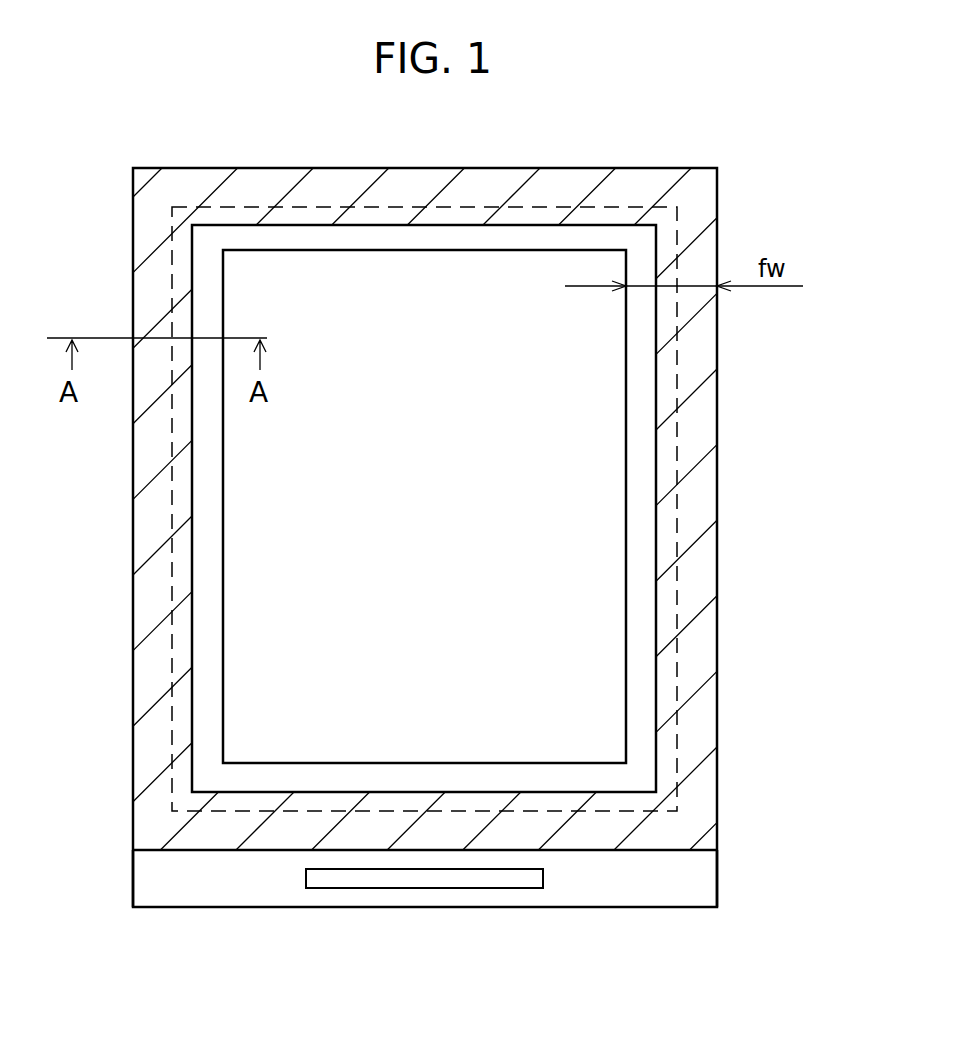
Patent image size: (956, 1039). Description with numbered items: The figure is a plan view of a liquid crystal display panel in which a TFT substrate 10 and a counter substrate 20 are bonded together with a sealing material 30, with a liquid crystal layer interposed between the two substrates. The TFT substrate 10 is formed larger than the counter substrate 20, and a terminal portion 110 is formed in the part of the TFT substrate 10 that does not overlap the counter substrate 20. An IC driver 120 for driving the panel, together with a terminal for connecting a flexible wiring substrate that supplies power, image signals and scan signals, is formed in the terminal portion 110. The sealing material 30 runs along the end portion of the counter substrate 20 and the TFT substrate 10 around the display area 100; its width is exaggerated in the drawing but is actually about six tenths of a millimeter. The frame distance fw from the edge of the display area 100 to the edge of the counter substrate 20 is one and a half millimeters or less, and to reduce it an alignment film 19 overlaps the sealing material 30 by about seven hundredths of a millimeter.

The TFT substrate 10 is at (717, 877).
The counter substrate 20 is at (717, 622).
The sealing material 30 is at (707, 553).
The alignment film 19 is at (677, 366).
The display area 100 is at (590, 470).
The terminal portion 110 is at (632, 880).
The IC driver 120 is at (442, 878).